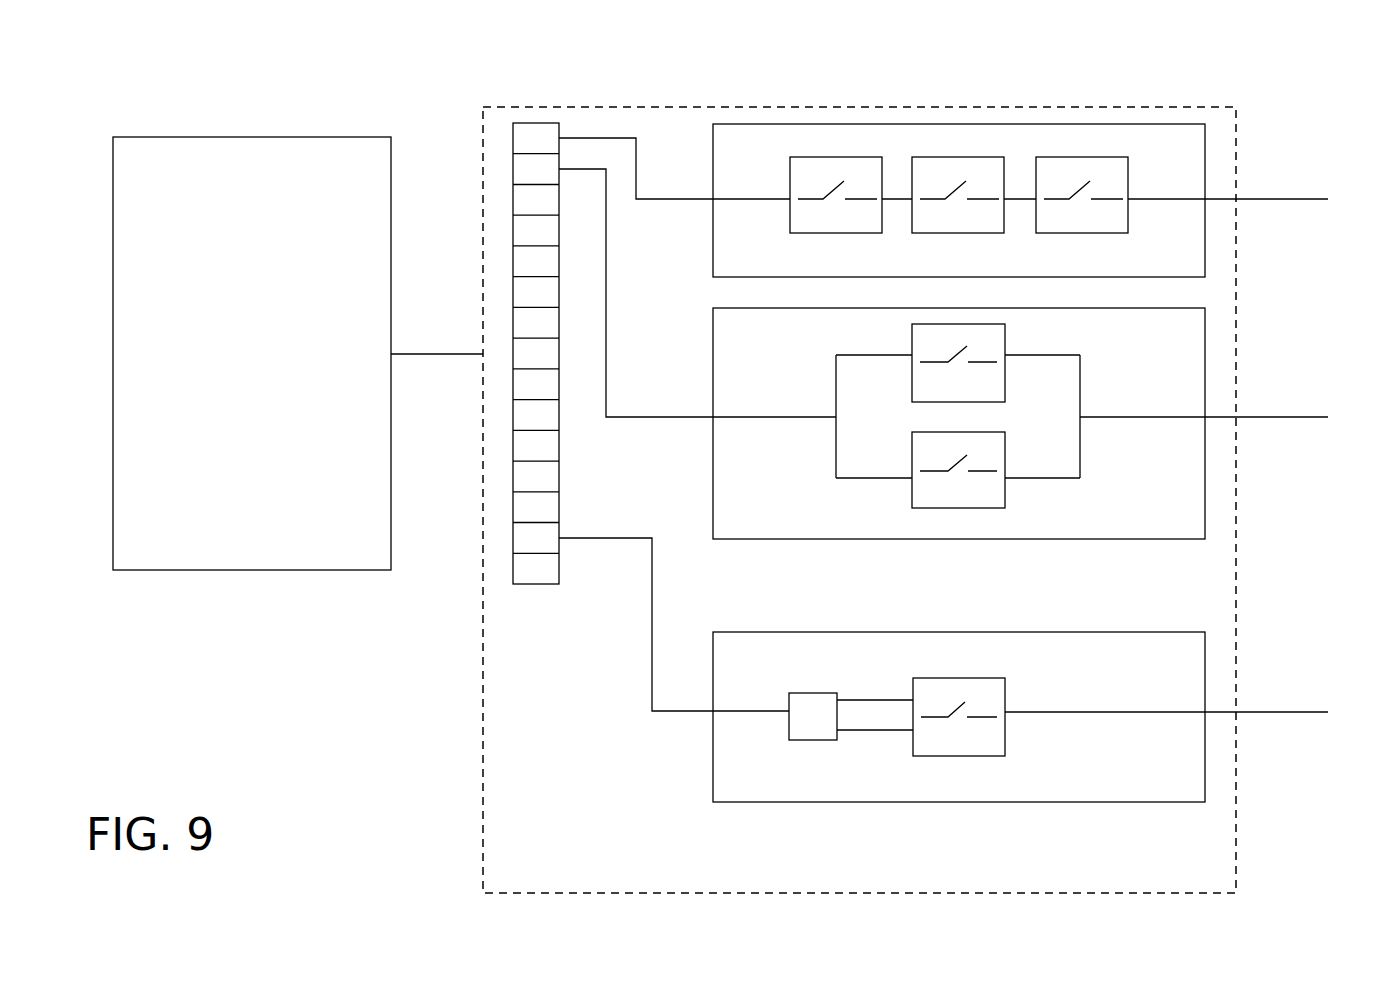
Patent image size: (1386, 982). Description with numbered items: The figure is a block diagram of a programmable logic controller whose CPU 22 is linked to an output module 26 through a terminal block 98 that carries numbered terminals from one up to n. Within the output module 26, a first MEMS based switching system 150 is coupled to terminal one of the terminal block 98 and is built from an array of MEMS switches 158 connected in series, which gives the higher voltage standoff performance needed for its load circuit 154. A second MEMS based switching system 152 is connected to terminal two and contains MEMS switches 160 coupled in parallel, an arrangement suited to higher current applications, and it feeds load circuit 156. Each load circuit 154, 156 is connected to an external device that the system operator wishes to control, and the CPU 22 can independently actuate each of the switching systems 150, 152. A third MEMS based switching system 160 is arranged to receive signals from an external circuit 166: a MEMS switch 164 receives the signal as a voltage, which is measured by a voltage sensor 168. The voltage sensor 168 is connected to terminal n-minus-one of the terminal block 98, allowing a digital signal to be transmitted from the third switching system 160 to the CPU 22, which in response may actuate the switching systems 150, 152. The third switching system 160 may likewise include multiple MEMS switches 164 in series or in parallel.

The CPU 22 is at (278, 144).
The output module 26 is at (697, 107).
The terminal block 98 is at (559, 401).
The MEMS based switching system 150 is at (980, 130).
The MEMS based switching system 152 is at (967, 539).
The load circuit 154 is at (1275, 207).
The load circuit 156 is at (1273, 417).
The MEMS switches 158 is at (870, 237).
The MEMS switches / third MEMS based switching system 160 is at (912, 348).
The MEMS switch 164 is at (970, 756).
The external circuit 166 is at (1263, 712).
The voltage sensor 168 is at (827, 694).